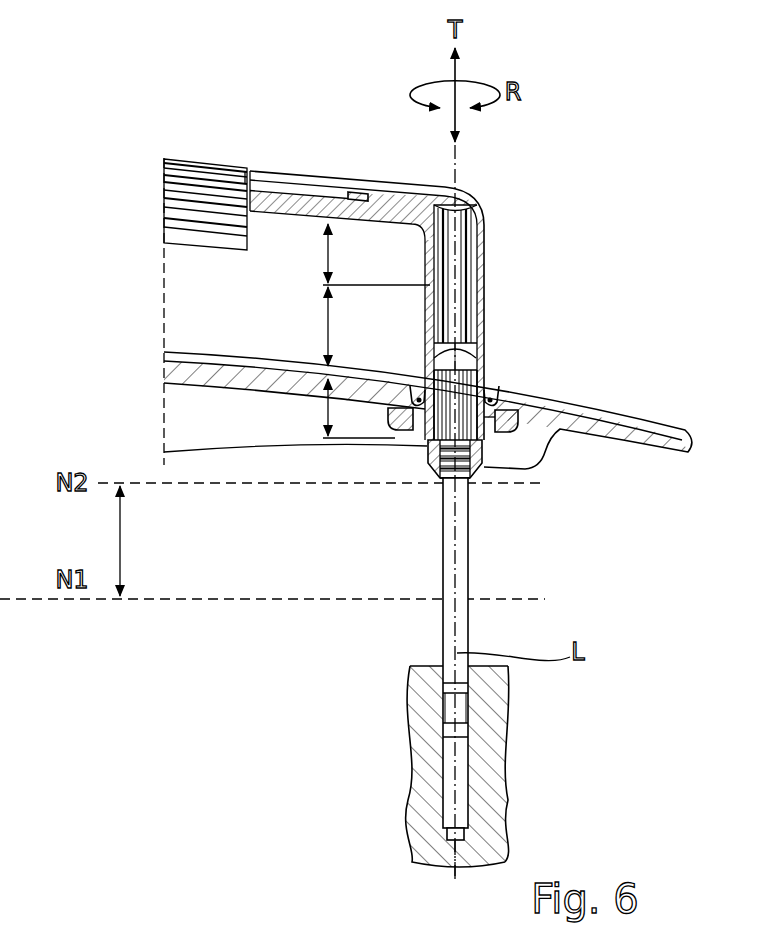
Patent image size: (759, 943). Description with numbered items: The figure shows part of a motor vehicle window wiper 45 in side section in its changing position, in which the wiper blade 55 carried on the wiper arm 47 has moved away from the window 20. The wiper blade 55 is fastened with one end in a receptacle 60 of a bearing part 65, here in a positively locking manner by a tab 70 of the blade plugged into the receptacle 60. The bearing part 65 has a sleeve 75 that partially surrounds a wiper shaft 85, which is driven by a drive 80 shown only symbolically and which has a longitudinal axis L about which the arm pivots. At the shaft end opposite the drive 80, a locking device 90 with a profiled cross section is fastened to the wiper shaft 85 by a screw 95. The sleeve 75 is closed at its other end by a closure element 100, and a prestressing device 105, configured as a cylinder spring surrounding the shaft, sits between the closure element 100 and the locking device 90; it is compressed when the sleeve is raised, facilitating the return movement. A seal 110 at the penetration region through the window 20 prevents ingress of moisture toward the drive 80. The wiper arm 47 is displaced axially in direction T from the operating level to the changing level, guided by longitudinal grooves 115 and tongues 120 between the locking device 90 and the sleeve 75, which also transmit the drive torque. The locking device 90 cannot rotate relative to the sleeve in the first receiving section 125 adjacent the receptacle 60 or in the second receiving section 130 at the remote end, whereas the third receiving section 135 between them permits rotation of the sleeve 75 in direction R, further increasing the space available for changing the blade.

The window 20 is at (648, 432).
The motor vehicle window wiper 45 is at (562, 101).
The wiper arm 47 is at (214, 116).
The wiper blade 55 is at (198, 218).
The receptacle 60 is at (357, 197).
The bearing part 65 is at (397, 208).
The tab 70 is at (293, 190).
The sleeve 75 is at (430, 313).
The drive 80 is at (448, 817).
The wiper shaft 85 is at (448, 758).
The locking device 90 is at (465, 385).
The screw 95 is at (465, 358).
The closure element 100 is at (428, 470).
The prestressing device 105 is at (480, 447).
The seal 110 is at (518, 433).
The grooves 115 is at (467, 285).
The tongues 120 is at (468, 425).
The first receiving section 125 is at (343, 254).
The second receiving section 130 is at (318, 408).
The third receiving section 135 is at (283, 326).